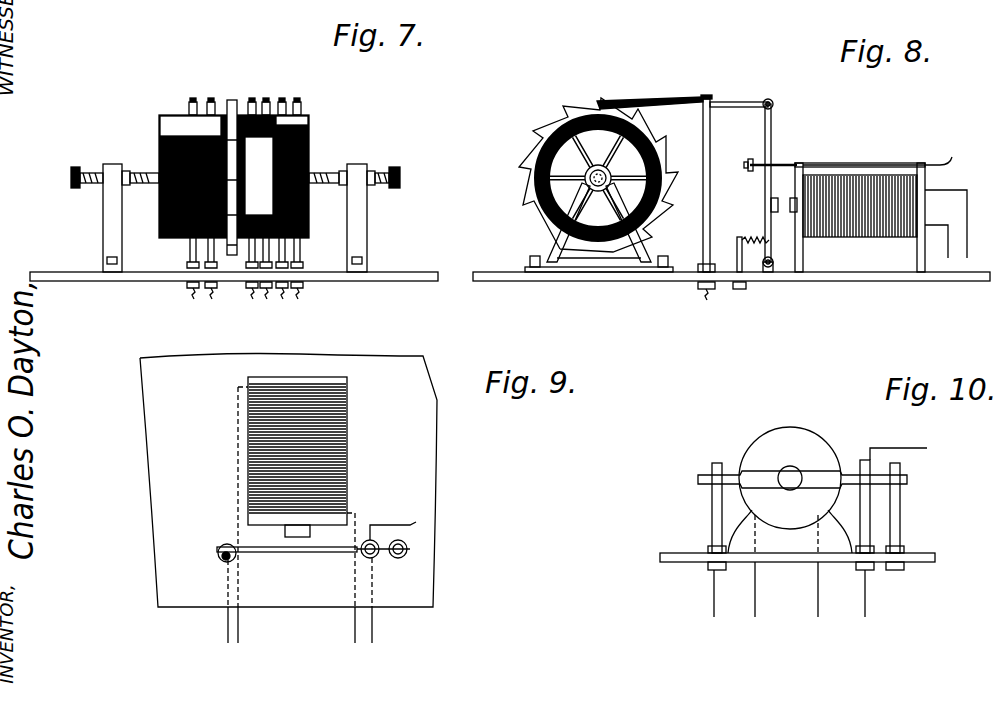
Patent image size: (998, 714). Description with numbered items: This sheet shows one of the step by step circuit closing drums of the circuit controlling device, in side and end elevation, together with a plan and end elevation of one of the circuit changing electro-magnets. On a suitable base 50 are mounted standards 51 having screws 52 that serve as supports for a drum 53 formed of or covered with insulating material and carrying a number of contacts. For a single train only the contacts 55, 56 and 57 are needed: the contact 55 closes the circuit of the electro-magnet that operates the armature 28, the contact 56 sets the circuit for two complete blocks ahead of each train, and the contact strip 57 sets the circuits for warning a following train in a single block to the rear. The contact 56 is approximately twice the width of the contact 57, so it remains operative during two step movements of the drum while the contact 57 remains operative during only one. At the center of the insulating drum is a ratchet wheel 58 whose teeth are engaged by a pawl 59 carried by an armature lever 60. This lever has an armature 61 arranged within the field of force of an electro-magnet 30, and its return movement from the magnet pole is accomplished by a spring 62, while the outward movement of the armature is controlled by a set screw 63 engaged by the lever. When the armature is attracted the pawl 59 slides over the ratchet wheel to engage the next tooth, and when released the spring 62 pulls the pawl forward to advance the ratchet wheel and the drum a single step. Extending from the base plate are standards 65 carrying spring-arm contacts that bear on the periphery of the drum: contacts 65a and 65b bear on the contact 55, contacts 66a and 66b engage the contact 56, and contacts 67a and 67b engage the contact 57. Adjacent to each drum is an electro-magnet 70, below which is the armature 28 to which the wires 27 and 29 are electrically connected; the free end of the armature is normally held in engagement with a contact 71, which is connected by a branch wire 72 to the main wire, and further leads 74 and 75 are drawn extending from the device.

In FIG. 9, the wire 27 is at (389, 532).
In FIG. 10, the wire 27 is at (891, 500).
In FIG. 9, the armature 28 is at (322, 549).
In FIG. 10, the armature 28 is at (740, 470).
In FIG. 9, the wire 29 is at (372, 634).
In FIG. 10, the wire 29 is at (865, 592).
In FIG. 8, the electro-magnet 30 is at (858, 230).
In FIG. 7, the base 50 is at (400, 272).
In FIG. 8, the base 50 is at (648, 272).
In FIG. 7, the standards 51 is at (360, 237).
In FIG. 8, the standards 51 is at (556, 247).
In FIG. 7, the screws 52 is at (85, 172).
In FIG. 8, the screws 52 is at (592, 183).
In FIG. 7, the drum 53 is at (310, 148).
In FIG. 8, the drum 53 is at (538, 167).
In FIG. 7, the contact 55 is at (162, 128).
In FIG. 7, the contact 56 is at (259, 176).
In FIG. 7, the contact strip 57 is at (299, 122).
In FIG. 8, the contact strip 57 is at (576, 120).
In FIG. 7, the ratchet wheel 58 is at (232, 98).
In FIG. 8, the ratchet wheel 58 is at (555, 115).
In FIG. 8, the pawl 59 is at (740, 103).
In FIG. 8, the armature lever 60 is at (772, 137).
In FIG. 8, the armature 61 is at (770, 203).
In FIG. 8, the spring 62 is at (745, 240).
In FIG. 8, the set screw 63 is at (760, 160).
In FIG. 7, the standards 65 is at (299, 250).
In FIG. 8, the standards 65 is at (703, 227).
In FIG. 7, the contact 65a is at (193, 98).
In FIG. 7, the contact 65b is at (211, 98).
In FIG. 7, the contact 66a is at (252, 98).
In FIG. 7, the contact 66b is at (267, 98).
In FIG. 7, the contact 67a is at (283, 97).
In FIG. 7, the contact 67b is at (298, 97).
In FIG. 9, the electro-magnet 70 is at (340, 475).
In FIG. 10, the electro-magnet 70 is at (815, 450).
In FIG. 9, the contact 71 is at (224, 561).
In FIG. 10, the contact 71 is at (714, 500).
In FIG. 9, the branch wire 72 is at (228, 628).
In FIG. 10, the branch wire 72 is at (714, 598).
In FIG. 9, the conductor wire 74 is at (238, 628).
In FIG. 10, the conductor wire 74 is at (755, 598).
In FIG. 9, the conductor wire 75 is at (355, 634).
In FIG. 10, the conductor wire 75 is at (818, 592).